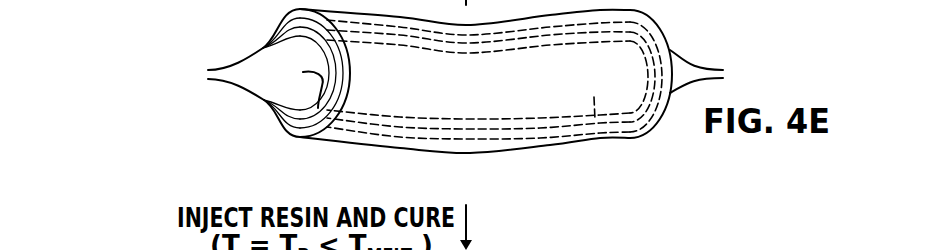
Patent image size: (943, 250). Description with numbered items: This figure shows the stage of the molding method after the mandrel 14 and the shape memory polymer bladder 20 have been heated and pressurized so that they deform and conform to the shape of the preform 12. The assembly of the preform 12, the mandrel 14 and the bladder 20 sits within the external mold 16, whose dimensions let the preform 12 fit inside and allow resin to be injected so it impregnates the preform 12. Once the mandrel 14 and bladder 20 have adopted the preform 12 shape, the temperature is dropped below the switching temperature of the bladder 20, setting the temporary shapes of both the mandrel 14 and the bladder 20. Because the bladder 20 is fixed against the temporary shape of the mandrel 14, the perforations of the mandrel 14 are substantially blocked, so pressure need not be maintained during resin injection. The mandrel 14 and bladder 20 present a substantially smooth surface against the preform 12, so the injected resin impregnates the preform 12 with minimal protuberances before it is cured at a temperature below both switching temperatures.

The preform 12 is at (283, 35).
The mandrel 14 is at (268, 117).
The external mold 16 is at (267, 103).
The shape memory polymer bladder 20 is at (297, 139).